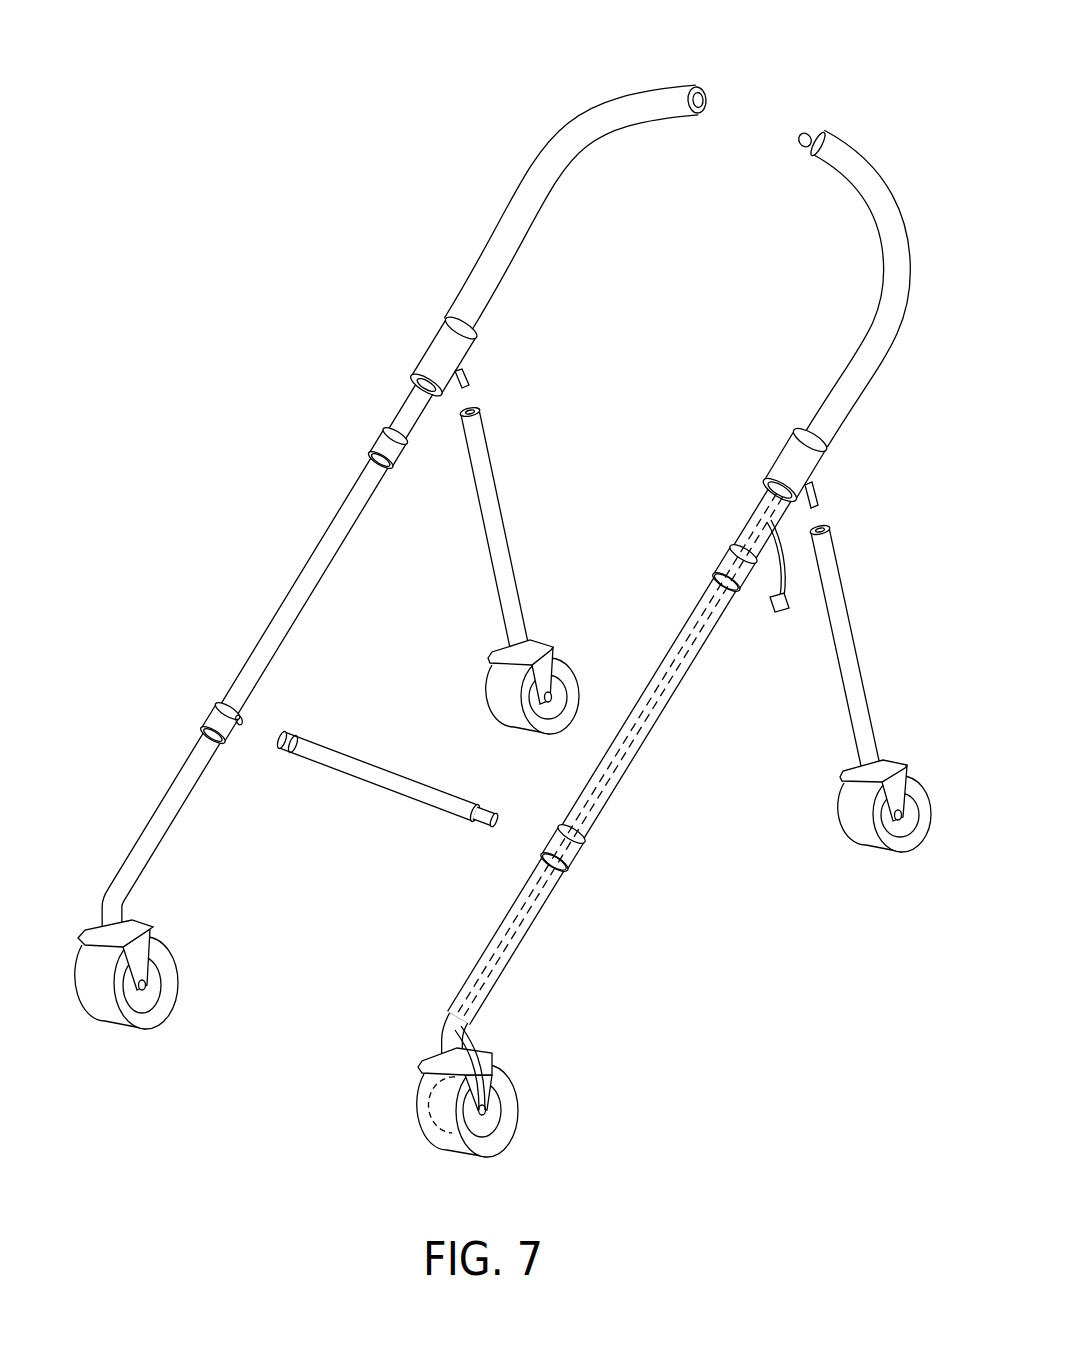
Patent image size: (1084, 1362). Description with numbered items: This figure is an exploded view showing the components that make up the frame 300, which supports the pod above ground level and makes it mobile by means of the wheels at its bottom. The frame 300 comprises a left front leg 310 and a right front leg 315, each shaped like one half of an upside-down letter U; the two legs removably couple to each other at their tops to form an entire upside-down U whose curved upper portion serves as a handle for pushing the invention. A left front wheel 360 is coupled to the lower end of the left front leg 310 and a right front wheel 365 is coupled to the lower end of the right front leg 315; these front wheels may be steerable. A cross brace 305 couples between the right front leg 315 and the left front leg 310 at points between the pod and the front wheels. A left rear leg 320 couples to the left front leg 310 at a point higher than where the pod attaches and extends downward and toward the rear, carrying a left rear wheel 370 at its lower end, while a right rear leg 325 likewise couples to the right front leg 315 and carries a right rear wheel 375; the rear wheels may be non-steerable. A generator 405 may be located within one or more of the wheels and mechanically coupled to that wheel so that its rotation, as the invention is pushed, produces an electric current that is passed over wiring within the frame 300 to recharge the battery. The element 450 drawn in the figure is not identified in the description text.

The frame 300 is at (205, 1177).
The cross brace 305 is at (403, 795).
The left front leg 310 is at (643, 740).
The right front leg 315 is at (298, 573).
The left rear leg 320 is at (850, 608).
The right rear leg 325 is at (492, 497).
The left front wheel 360 is at (515, 1105).
The right front wheel 365 is at (173, 970).
The left rear wheel 370 is at (865, 828).
The right rear wheel 375 is at (575, 665).
The generator 405 is at (428, 1100).
The cable 450 is at (533, 910).